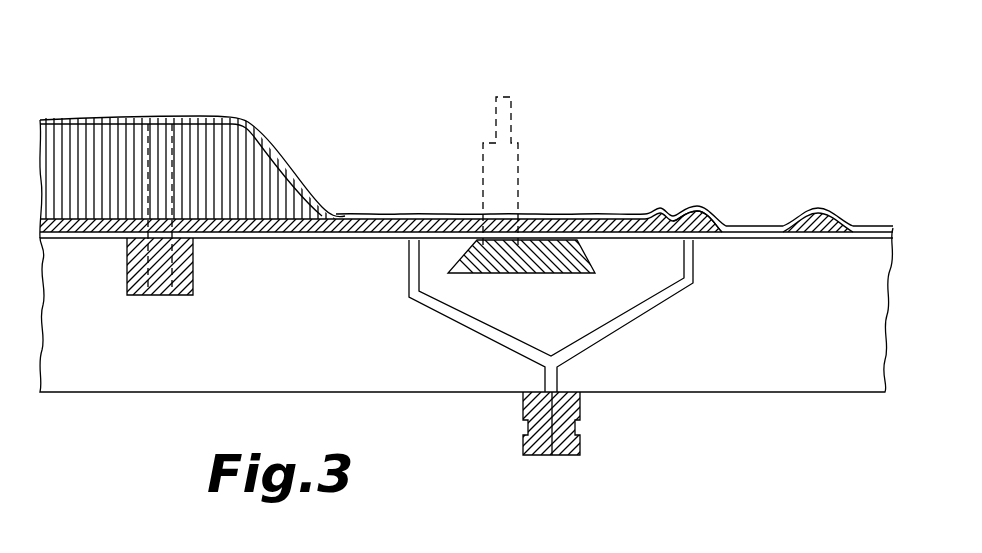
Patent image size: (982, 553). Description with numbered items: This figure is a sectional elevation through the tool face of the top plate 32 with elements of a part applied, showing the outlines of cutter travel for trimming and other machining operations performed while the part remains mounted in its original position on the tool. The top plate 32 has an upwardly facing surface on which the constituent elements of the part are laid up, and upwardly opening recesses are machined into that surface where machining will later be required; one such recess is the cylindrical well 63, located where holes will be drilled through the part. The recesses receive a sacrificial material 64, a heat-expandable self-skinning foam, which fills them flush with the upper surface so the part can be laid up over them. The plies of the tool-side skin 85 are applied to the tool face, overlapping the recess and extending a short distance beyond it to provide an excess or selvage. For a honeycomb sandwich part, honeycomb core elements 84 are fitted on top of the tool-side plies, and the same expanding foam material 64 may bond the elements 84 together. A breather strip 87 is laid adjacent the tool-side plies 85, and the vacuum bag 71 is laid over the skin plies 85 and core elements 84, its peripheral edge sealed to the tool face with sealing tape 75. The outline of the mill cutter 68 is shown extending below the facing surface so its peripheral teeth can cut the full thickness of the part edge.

The top plate 32 is at (55, 378).
The cylindrical well 63 is at (130, 290).
The sacrificial material 64 is at (543, 248).
The mill cutter 68 is at (513, 155).
The vacuum bag 71 is at (58, 120).
The sealing tape 75 is at (825, 213).
The honeycomb core elements 84 is at (232, 147).
The tool-side skin 85 is at (441, 229).
The breather strip 87 is at (702, 220).